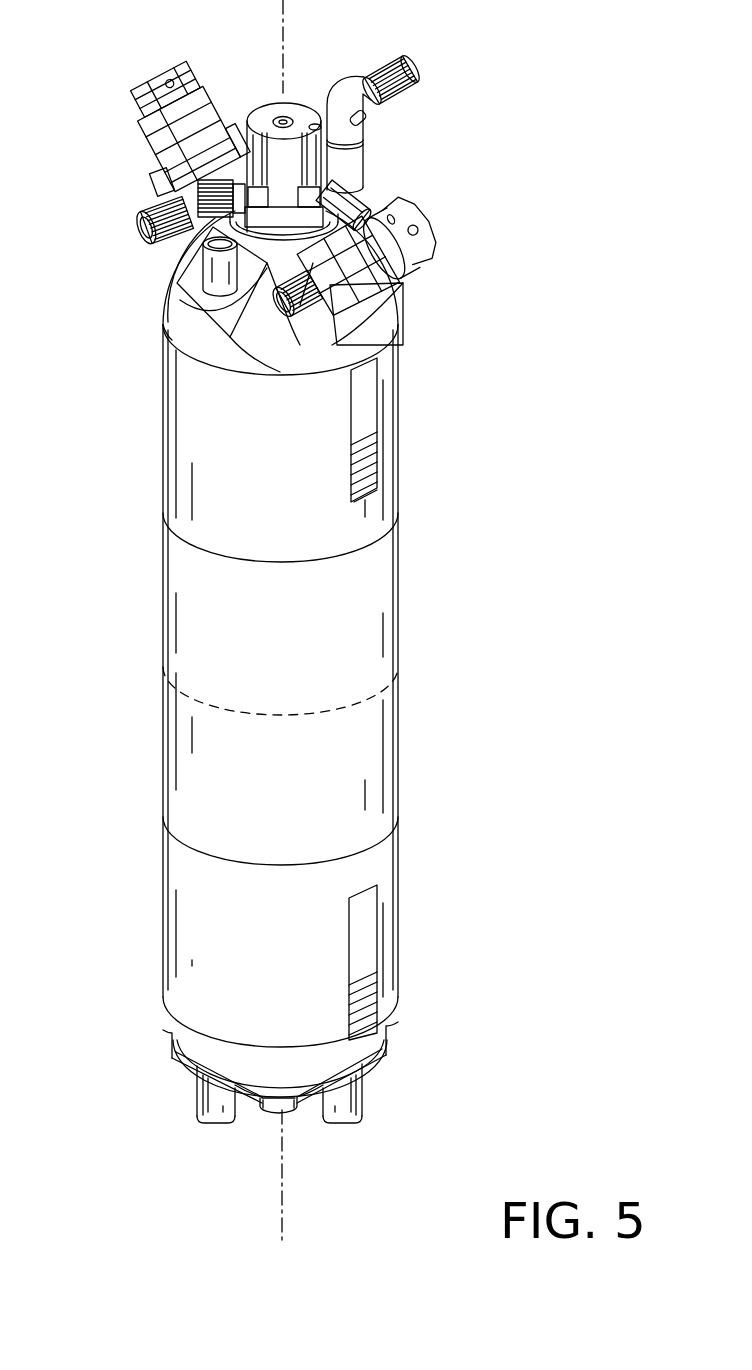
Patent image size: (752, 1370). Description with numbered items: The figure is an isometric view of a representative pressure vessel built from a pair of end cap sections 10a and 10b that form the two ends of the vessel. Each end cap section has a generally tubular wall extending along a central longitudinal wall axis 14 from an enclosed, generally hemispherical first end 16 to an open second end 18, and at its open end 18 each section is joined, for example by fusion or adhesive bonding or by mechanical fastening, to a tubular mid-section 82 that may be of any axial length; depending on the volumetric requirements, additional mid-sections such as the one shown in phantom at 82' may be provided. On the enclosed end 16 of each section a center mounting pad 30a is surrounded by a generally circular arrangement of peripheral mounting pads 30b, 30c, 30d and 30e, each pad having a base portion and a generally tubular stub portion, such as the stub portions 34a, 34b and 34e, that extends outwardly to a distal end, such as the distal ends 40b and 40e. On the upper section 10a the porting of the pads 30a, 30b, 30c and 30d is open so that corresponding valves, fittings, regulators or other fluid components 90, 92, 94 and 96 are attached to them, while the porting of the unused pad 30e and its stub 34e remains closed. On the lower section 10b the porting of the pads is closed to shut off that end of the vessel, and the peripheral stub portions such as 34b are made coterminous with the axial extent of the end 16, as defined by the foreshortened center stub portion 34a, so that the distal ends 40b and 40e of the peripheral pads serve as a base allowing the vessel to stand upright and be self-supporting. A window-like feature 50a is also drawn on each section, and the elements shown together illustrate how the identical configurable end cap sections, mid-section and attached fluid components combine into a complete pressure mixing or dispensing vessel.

The central longitudinal wall axis 14 is at (287, 42).
The fluid component 90 is at (258, 103).
The fluid component 94 is at (366, 150).
The peripheral mounting pad 30c is at (358, 190).
The fluid component 96 is at (146, 152).
The peripheral mounting pad 30d is at (186, 236).
The enclosed first end 16 is at (187, 263).
The tubular stub portion 34e is at (222, 330).
The peripheral mounting pad 30e is at (225, 303).
The center mounting pad 30a is at (235, 357).
The window 50a is at (350, 440).
The end cap section 10a is at (486, 433).
The peripheral mounting pad 30b is at (380, 328).
The fluid component 92 is at (403, 267).
The open second end 18 is at (208, 552).
The tubular mid-section 82 is at (350, 661).
The tubular mid-section 82' is at (331, 701).
The end cap section 10b is at (435, 930).
The tubular stub portion 34a is at (263, 1110).
The tubular stub portion 34b is at (364, 1105).
The distal end 40e is at (210, 1124).
The distal end 40b is at (346, 1124).